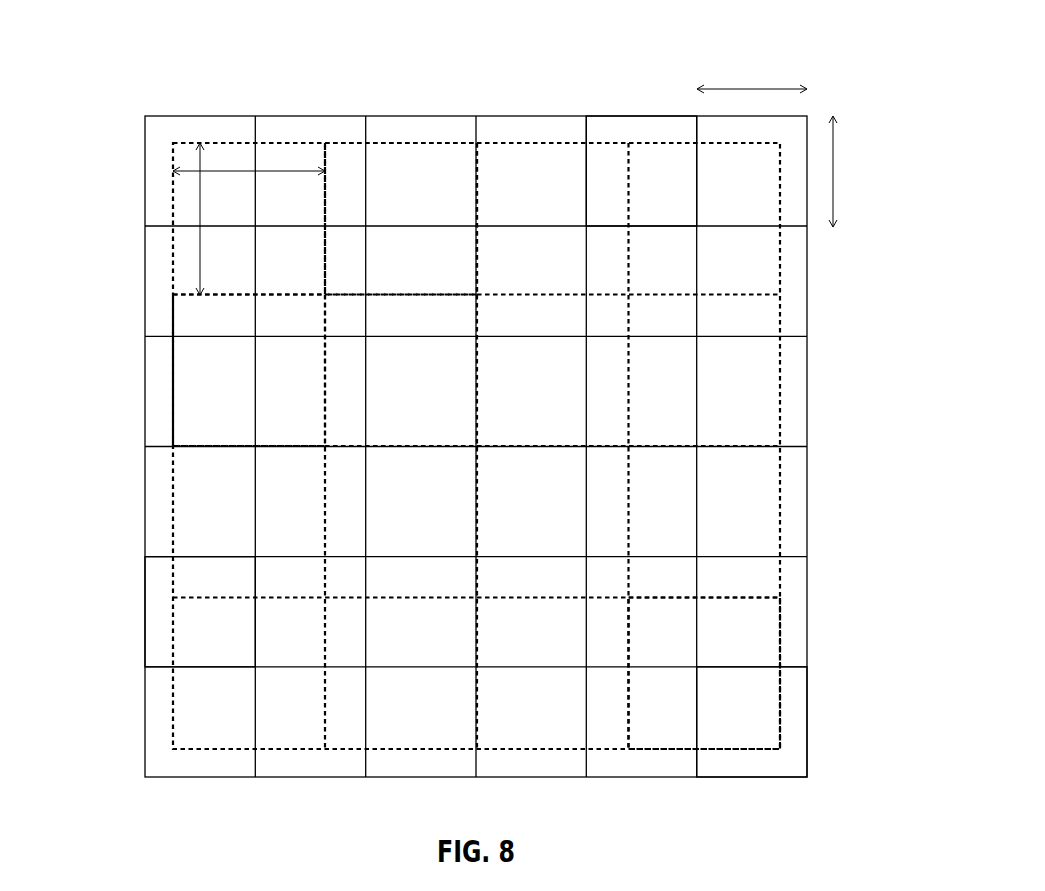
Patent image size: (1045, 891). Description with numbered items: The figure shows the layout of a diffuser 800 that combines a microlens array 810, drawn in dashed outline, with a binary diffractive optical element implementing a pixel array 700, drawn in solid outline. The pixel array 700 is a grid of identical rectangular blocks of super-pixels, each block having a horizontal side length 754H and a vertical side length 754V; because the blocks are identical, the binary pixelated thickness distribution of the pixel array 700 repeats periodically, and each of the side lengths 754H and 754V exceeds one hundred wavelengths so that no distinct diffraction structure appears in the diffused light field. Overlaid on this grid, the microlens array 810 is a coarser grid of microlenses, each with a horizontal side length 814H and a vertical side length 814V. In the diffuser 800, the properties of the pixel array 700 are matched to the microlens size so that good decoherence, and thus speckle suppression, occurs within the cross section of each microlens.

The diffuser 800 is at (92, 66).
The pixel array 700 is at (555, 116).
The microlens array 810 is at (528, 143).
The horizontal side length 814H is at (249, 171).
The vertical side length 814V is at (199, 219).
The horizontal side length 754H is at (752, 90).
The vertical side length 754V is at (834, 171).